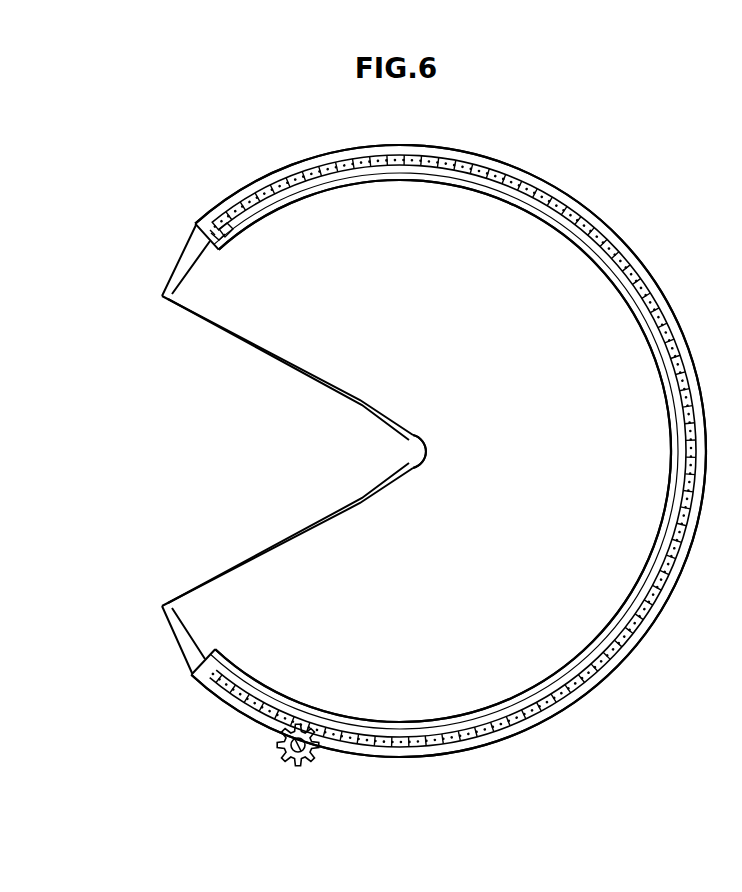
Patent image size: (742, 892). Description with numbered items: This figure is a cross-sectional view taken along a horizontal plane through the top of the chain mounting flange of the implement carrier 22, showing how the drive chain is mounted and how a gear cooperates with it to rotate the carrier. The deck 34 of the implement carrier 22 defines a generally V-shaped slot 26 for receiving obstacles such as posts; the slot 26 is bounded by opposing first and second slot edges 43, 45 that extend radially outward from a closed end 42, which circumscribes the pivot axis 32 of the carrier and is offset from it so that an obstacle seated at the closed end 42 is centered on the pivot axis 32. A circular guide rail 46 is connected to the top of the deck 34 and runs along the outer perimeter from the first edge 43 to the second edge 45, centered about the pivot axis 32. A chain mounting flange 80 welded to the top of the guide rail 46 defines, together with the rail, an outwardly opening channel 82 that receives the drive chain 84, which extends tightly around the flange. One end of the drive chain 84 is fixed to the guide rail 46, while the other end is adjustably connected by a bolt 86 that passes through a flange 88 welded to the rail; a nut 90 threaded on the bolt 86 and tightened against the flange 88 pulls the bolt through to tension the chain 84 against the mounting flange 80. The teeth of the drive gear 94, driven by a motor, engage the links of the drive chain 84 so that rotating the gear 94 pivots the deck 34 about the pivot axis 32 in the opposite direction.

The implement carrier 22 is at (224, 134).
The slot 26 is at (156, 450).
The pivot axis 32 is at (401, 449).
The deck 34 is at (394, 357).
The closed end 42 is at (421, 452).
The first slot edge 43 is at (222, 330).
The second slot edge 45 is at (192, 585).
The guide rail 46 is at (268, 186).
The chain mounting flange 80 is at (396, 168).
The channel 82 is at (636, 265).
The drive chain 84 is at (537, 187).
The bolt 86 is at (225, 227).
The flange 88 is at (213, 234).
The nut 90 is at (210, 234).
The drive gear 94 is at (279, 745).